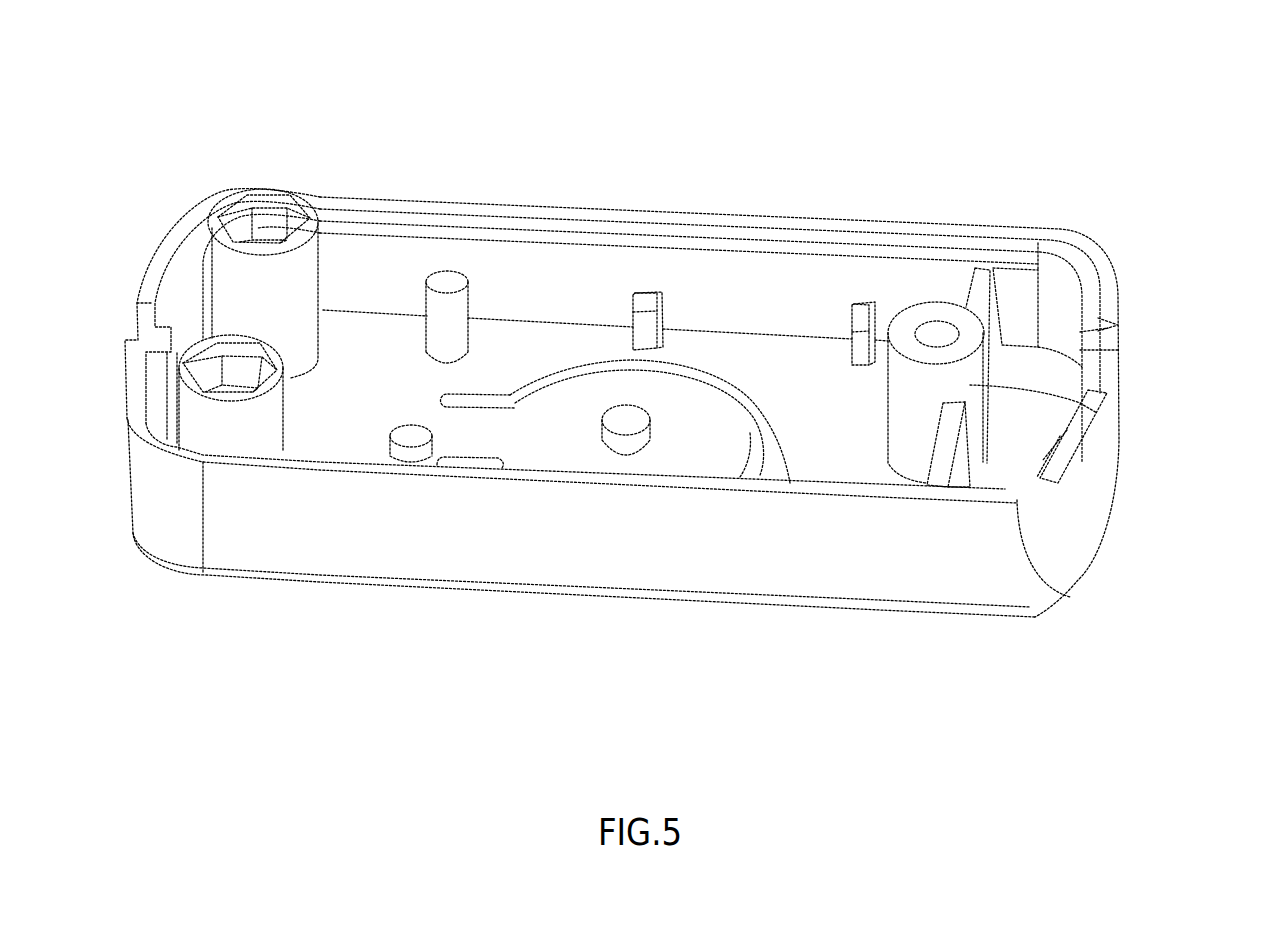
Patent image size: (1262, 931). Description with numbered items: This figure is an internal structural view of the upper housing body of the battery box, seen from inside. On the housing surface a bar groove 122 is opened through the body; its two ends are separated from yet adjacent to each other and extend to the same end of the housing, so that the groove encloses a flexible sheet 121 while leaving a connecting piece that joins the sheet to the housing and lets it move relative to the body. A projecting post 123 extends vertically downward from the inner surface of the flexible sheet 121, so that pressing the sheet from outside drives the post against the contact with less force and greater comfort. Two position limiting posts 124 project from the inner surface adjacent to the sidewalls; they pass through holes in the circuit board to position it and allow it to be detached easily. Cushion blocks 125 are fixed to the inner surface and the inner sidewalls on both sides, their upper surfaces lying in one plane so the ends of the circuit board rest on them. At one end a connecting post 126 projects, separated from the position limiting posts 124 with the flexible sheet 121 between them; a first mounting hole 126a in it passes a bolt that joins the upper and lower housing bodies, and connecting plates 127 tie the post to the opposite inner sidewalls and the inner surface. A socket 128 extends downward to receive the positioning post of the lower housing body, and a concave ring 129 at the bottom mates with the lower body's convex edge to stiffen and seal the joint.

The flexible sheet 121 is at (690, 447).
The bar groove 122 is at (762, 442).
The projecting post 123 is at (625, 420).
The position limiting post 124 is at (445, 318).
The cushion block 125 is at (647, 293).
The connecting post 126 is at (1097, 413).
The first mounting hole 126a is at (937, 335).
The connecting plate 127 is at (943, 452).
The socket 128 is at (268, 227).
The concave ring 129 is at (772, 240).